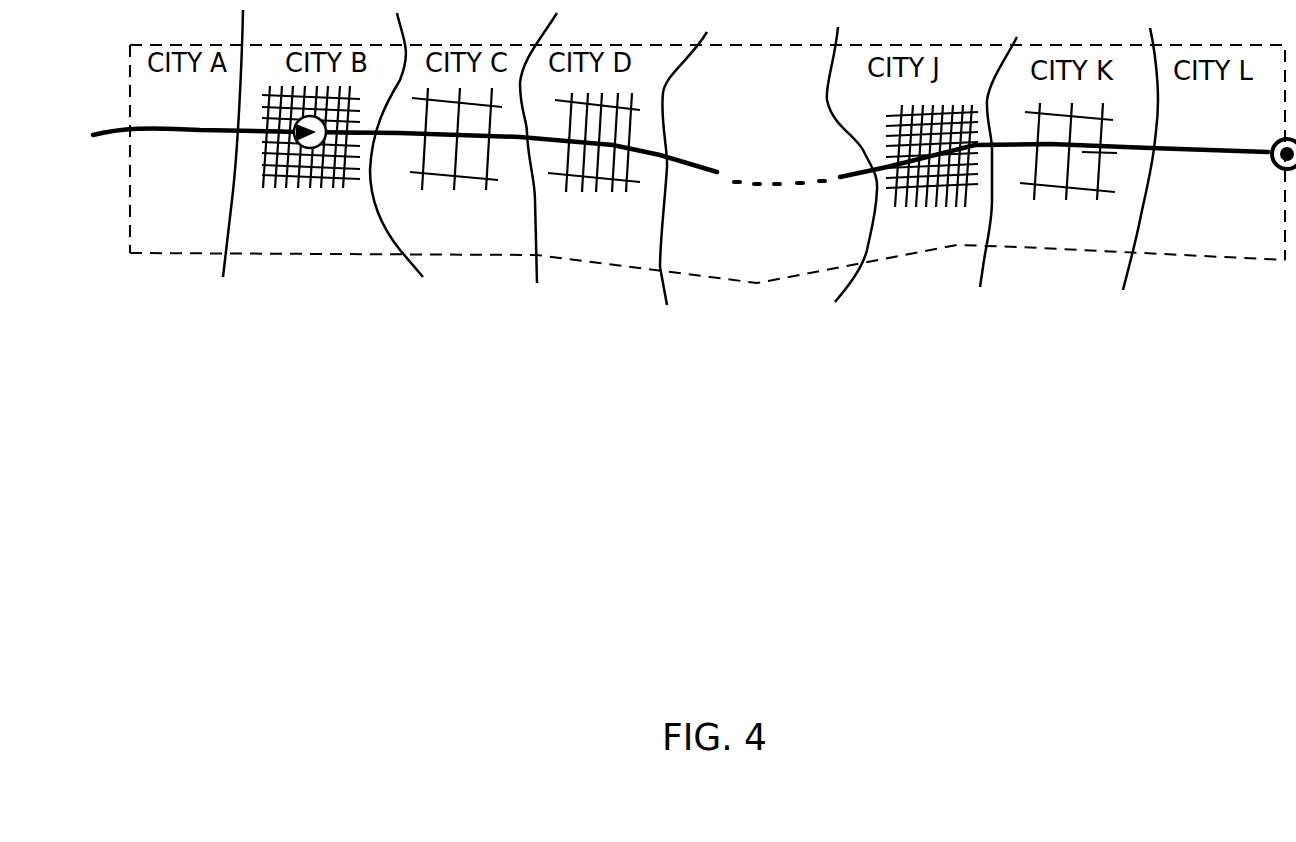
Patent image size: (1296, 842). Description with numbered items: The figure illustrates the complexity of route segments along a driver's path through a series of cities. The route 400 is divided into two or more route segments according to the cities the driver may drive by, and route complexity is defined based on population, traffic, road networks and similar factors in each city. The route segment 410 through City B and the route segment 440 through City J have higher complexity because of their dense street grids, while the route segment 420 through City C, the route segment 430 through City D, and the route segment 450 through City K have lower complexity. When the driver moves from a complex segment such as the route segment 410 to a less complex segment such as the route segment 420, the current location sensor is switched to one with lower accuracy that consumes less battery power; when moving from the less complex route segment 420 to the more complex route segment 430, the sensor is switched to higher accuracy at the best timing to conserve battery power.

The route 400 is at (166, 149).
The route segment 410 is at (308, 209).
The route segment 420 is at (468, 211).
The route segment 430 is at (609, 228).
The route segment 440 is at (939, 228).
The route segment 450 is at (1070, 228).